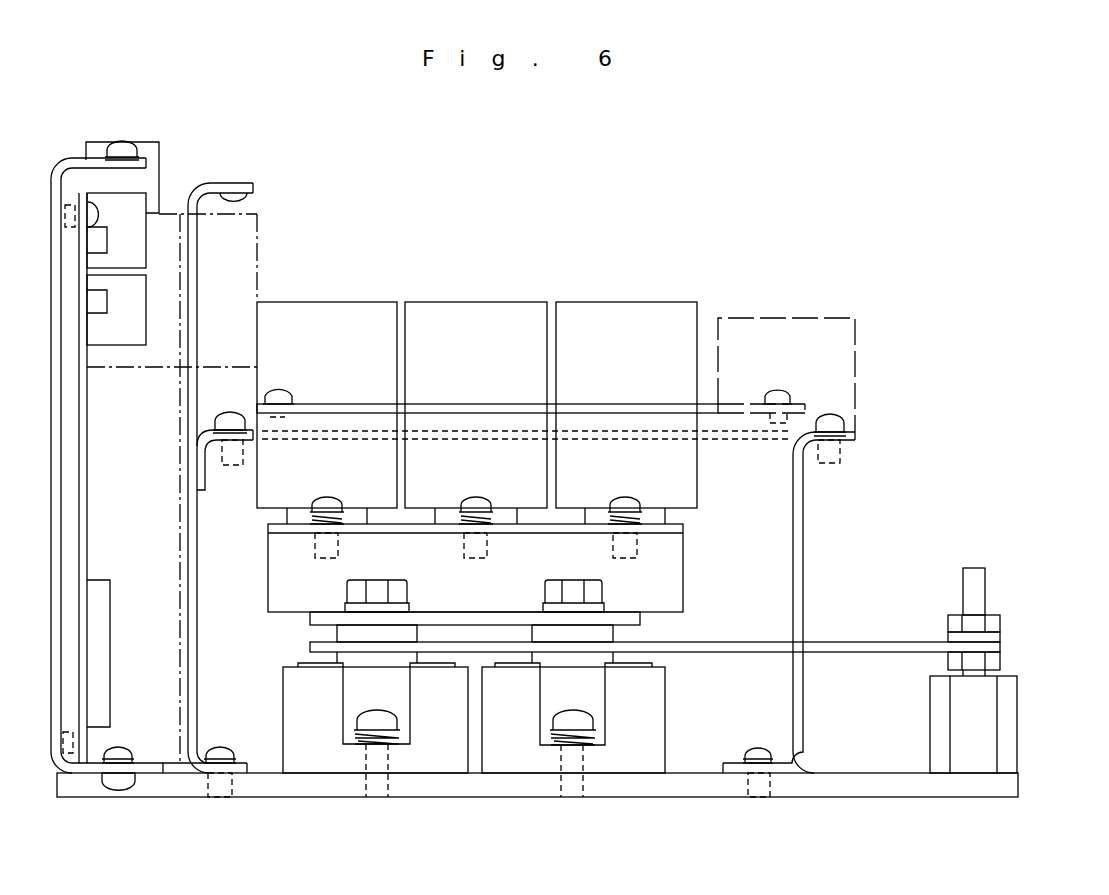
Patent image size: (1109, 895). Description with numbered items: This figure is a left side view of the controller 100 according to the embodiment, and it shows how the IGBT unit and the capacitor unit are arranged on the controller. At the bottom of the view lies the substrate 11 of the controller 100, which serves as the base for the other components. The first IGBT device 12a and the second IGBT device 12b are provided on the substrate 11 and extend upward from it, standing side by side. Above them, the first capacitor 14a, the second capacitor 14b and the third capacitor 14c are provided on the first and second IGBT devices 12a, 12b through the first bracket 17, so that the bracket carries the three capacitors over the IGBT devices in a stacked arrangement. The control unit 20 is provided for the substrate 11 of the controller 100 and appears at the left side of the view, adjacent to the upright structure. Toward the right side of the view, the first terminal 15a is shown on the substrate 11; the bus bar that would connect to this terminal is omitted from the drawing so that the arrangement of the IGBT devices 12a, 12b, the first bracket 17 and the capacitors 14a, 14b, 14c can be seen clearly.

The controller 100 is at (813, 190).
The control unit 20 is at (129, 205).
The first capacitor 14a is at (330, 300).
The second capacitor 14b is at (478, 300).
The third capacitor 14c is at (627, 300).
The first bracket 17 is at (670, 568).
The first IGBT device 12a is at (435, 762).
The second IGBT device 12b is at (632, 762).
The substrate 11 is at (907, 785).
The first terminal 15a is at (1007, 720).